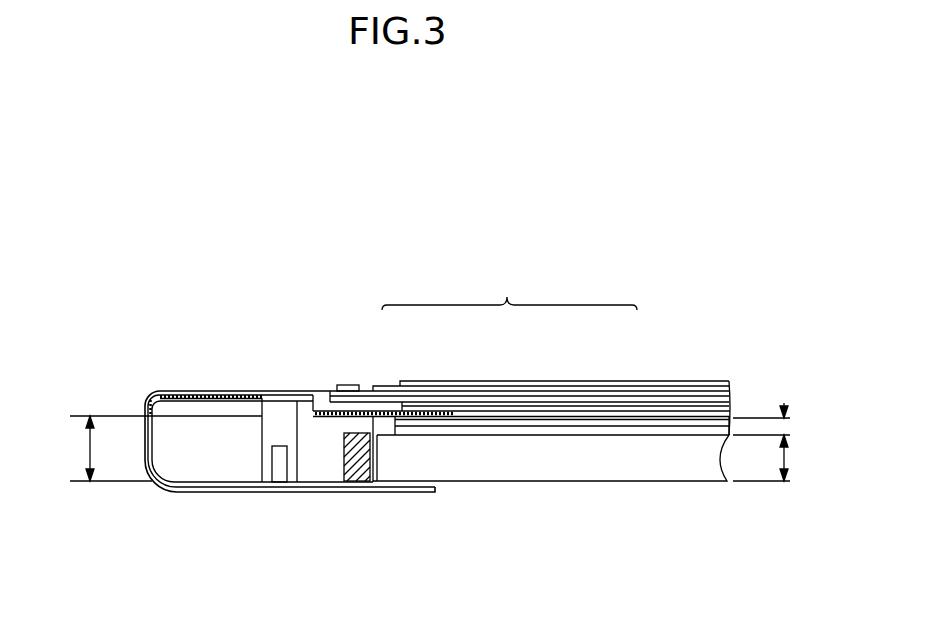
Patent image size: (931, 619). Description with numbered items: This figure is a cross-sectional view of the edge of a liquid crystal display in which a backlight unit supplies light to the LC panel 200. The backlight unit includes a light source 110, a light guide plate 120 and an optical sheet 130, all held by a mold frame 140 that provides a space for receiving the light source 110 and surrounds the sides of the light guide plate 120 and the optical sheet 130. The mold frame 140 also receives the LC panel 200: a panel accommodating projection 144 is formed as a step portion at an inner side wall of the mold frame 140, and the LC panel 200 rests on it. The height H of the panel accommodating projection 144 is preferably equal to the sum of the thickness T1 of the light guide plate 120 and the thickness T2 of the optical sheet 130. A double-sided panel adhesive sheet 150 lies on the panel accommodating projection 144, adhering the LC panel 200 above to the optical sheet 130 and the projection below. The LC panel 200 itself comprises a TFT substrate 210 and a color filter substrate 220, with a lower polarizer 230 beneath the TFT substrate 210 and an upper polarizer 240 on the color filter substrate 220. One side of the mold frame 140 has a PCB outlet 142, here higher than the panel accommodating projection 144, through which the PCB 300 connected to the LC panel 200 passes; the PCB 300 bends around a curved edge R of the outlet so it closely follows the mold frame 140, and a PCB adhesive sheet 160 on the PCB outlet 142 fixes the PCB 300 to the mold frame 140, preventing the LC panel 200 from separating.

The light source 110 is at (357, 470).
The light guide plate 120 is at (513, 478).
The optical sheet 130 is at (670, 418).
The mold frame 140 is at (190, 476).
The PCB outlet 142 is at (282, 398).
The panel accommodating projection 144 is at (330, 417).
The panel adhesive sheet 150 is at (327, 400).
The PCB adhesive sheet 160 is at (170, 395).
The LC panel 200 is at (509, 291).
The TFT substrate 210 is at (540, 400).
The color filter substrate 220 is at (476, 391).
The lower polarizer 230 is at (608, 410).
The upper polarizer 240 is at (412, 383).
The PCB 300 is at (236, 397).
The curved edge R is at (143, 405).
The height of the panel accommodating projection H is at (109, 448).
The thickness of the light guide plate T1 is at (777, 464).
The thickness of the optical sheet T2 is at (777, 442).